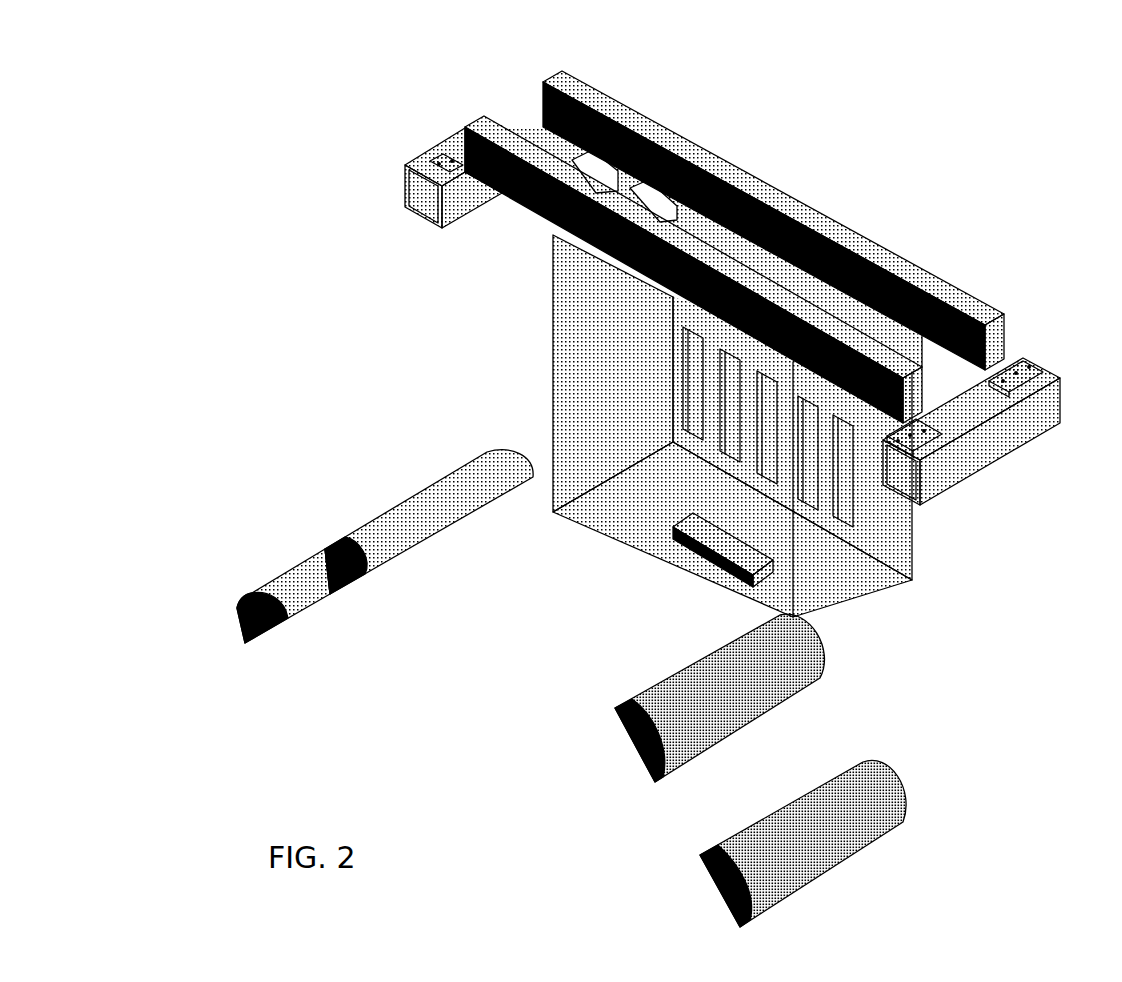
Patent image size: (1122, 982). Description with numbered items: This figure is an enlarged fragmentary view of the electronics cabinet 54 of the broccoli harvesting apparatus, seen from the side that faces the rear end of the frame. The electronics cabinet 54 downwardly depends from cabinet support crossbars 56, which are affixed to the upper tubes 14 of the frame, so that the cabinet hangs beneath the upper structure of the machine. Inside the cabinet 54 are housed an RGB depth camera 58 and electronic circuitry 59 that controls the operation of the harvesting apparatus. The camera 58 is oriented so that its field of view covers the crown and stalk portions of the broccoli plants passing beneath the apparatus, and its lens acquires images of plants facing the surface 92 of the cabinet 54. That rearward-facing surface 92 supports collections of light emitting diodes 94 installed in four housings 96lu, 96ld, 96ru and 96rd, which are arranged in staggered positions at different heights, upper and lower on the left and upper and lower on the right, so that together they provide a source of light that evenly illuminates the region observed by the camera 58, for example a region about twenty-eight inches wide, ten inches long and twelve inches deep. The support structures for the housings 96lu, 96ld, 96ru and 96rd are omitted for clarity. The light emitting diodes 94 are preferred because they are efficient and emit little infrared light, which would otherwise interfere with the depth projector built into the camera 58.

The upper tubes 14 is at (436, 156).
The electronics cabinet 54 is at (705, 426).
The cabinet support crossbars 56 is at (567, 80).
The RGB depth camera 58 is at (707, 548).
The electronic circuitry 59 is at (725, 464).
The surface 92 is at (757, 438).
The light emitting diodes 94 is at (550, 706).
The housing 96ld is at (253, 608).
The housing 96lu is at (332, 551).
The housing 96ru is at (647, 737).
The housing 96rd is at (725, 884).